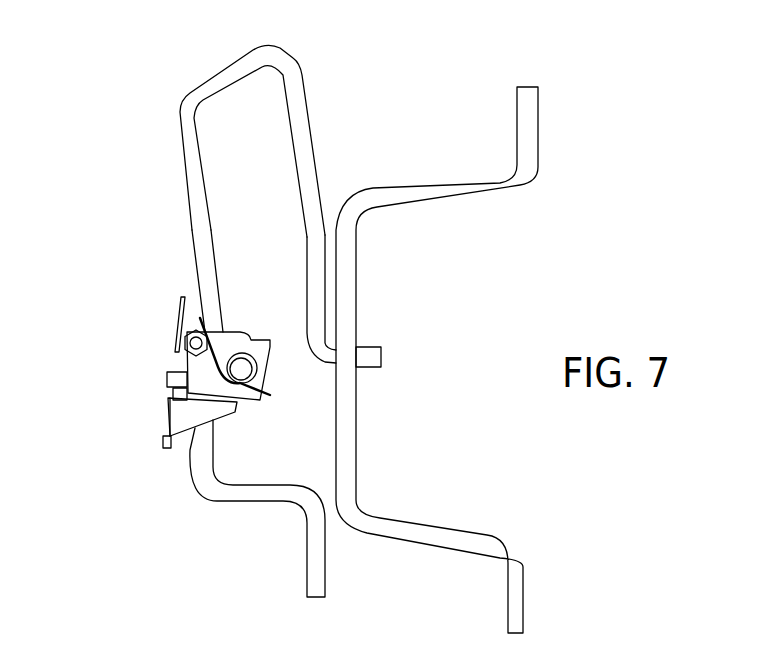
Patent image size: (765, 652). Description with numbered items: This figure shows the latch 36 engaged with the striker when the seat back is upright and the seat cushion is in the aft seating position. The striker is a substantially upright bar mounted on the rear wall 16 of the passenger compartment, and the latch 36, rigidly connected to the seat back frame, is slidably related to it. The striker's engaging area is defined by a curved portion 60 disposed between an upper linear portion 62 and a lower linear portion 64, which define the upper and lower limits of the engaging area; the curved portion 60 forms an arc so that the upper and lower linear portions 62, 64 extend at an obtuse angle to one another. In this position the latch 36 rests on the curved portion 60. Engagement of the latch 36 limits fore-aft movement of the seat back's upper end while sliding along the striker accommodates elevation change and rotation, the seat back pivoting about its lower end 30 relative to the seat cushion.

The rear wall 16 is at (443, 177).
The lower end 30 is at (199, 187).
The latch 36 is at (167, 375).
The curved portion 60 is at (200, 273).
The upper linear portion 62 is at (177, 117).
The lower linear portion 64 is at (190, 460).